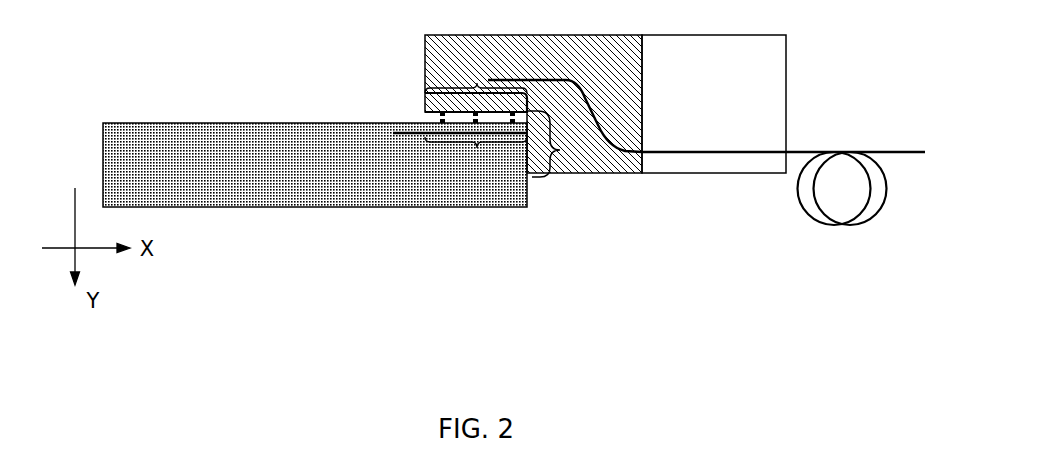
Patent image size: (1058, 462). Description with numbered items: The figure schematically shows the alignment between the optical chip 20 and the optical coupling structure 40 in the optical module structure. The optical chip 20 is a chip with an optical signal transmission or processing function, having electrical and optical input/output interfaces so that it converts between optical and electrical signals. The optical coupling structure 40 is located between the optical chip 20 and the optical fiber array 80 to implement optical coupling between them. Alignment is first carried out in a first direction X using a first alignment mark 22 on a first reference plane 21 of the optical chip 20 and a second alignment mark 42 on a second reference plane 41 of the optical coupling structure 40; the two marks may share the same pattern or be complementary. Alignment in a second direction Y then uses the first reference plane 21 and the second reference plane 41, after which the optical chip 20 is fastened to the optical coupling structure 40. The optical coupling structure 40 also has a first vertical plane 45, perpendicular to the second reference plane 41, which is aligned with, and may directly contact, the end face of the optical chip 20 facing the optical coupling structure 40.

The optical chip 20 is at (257, 172).
The first reference plane 21 is at (460, 155).
The first alignment mark 22 is at (440, 120).
The optical coupling structure 40 is at (597, 173).
The second reference plane 41 is at (675, 103).
The second alignment mark 42 is at (427, 108).
The first vertical plane 45 is at (562, 150).
The optical fiber array 80 is at (708, 165).